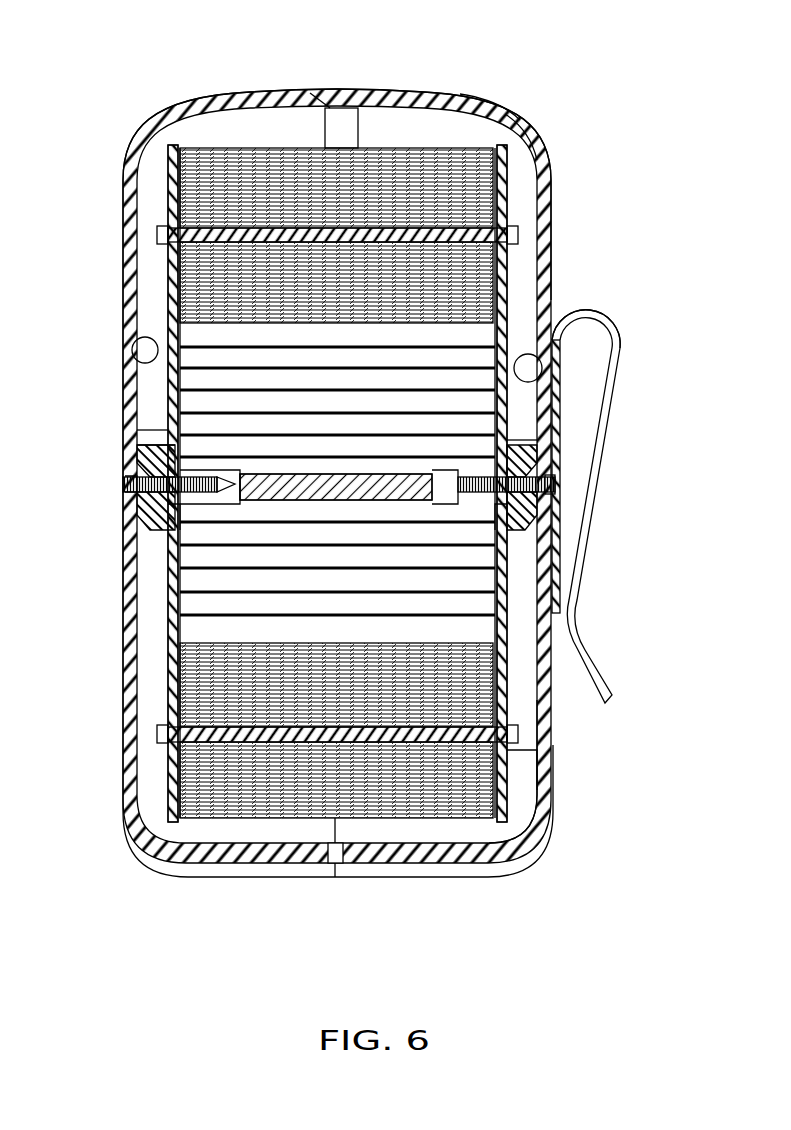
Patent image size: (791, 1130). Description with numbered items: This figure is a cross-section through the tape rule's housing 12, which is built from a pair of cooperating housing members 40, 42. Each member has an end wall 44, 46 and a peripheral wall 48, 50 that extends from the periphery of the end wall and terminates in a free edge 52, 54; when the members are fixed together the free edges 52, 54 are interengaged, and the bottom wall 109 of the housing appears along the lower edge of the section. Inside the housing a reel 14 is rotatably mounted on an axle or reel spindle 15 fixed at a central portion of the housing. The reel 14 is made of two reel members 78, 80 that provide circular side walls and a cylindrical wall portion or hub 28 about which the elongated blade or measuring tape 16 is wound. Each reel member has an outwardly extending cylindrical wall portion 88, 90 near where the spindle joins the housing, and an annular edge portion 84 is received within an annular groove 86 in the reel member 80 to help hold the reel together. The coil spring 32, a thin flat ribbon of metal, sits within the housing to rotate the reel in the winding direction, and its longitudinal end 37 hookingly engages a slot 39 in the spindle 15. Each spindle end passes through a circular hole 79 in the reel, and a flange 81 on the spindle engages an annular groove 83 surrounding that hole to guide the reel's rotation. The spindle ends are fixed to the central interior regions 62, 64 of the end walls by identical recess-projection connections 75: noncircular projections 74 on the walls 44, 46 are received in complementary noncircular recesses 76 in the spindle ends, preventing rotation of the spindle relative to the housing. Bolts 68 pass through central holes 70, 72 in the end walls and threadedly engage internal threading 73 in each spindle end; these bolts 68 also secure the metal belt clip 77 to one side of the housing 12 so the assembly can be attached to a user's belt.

The housing 12 is at (562, 232).
The reel 14 is at (505, 163).
The reel spindle 15 is at (530, 440).
The elongated blade 16 is at (500, 190).
The cylindrical wall portion 28 is at (480, 232).
The coil spring 32 is at (195, 690).
The longitudinal end of spring 37 is at (315, 490).
The slot 39 is at (400, 472).
The housing member 40 is at (275, 86).
The housing member 42 is at (425, 83).
The end wall 44 is at (125, 296).
The end wall 46 is at (552, 287).
The peripheral wall 48 is at (195, 114).
The peripheral wall 50 is at (477, 105).
The free edge 52 is at (342, 100).
The free edge 54 is at (318, 100).
The central interior region 62 is at (132, 352).
The central interior region 64 is at (598, 328).
The bolt 68 is at (125, 482).
The central hole 70 is at (140, 490).
The central hole 72 is at (545, 486).
The internal threading 73 is at (182, 530).
The projection 74 is at (215, 466).
The recess-projection connection 75 is at (144, 421).
The recess 76 is at (162, 505).
The clip 77 is at (592, 668).
The reel member 78 is at (150, 228).
The hole 79 is at (130, 450).
The reel member 80 is at (506, 126).
The flange 81 is at (187, 592).
The annular groove 83 is at (205, 436).
The annular edge portion 84 is at (556, 738).
The annular groove 86 is at (530, 765).
The cylindrical wall portion 88 is at (182, 548).
The cylindrical wall portion 90 is at (520, 530).
The bottom wall 109 is at (410, 866).